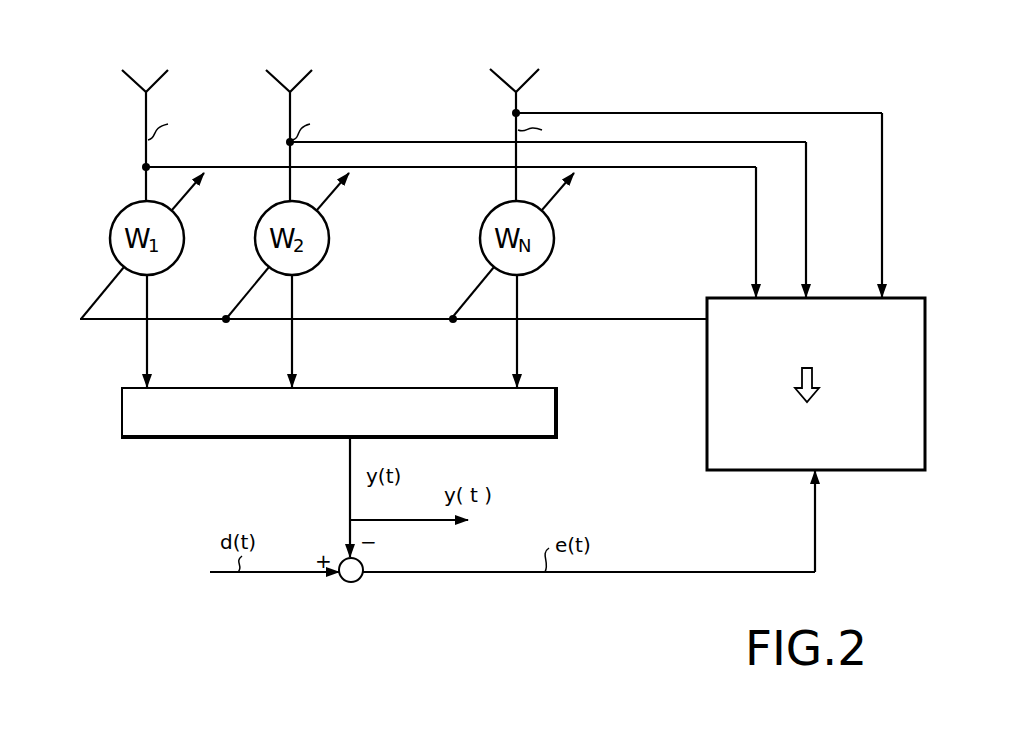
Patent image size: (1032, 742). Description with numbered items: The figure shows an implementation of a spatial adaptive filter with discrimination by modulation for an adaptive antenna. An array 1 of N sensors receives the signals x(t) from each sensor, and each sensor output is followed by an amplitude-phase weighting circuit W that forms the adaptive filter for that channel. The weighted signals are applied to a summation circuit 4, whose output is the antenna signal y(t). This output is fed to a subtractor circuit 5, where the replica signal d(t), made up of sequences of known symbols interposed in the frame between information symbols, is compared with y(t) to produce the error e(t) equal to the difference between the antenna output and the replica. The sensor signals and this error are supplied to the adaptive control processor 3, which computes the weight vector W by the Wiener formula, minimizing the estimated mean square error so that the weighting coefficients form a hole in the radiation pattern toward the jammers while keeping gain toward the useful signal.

The array of N sensors 1 is at (511, 52).
The adaptive control processor 3 is at (888, 472).
The summation circuit 4 is at (559, 418).
The subtractor circuit 5 is at (356, 583).